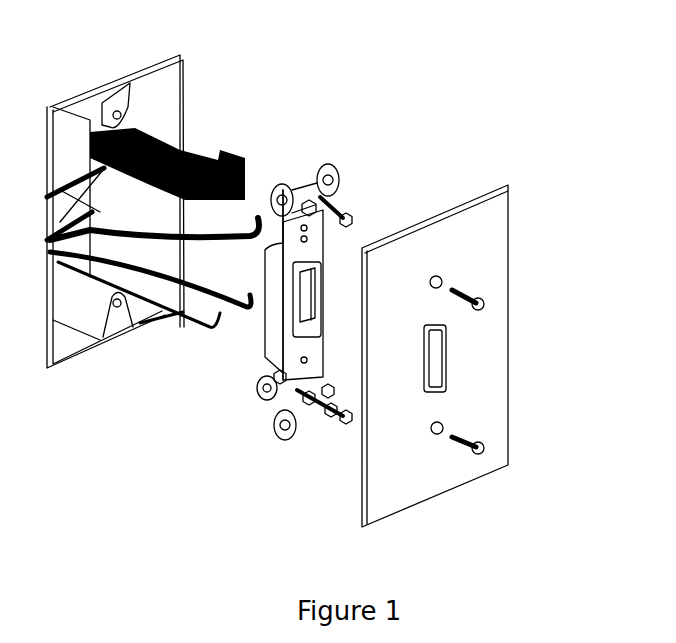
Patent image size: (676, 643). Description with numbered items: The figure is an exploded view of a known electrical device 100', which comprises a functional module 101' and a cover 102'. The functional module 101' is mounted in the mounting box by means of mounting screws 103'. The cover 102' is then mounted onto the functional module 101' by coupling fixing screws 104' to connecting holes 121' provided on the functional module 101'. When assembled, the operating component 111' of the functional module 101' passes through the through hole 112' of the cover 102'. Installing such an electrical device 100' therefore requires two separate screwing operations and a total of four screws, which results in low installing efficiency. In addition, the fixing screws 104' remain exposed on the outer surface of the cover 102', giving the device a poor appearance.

The electrical device 100' is at (338, 273).
The functional module 101' is at (283, 336).
The cover 102' is at (496, 356).
The mounting screws 103' is at (387, 190).
The fixing screws 104' is at (534, 372).
The operating component 111' is at (254, 369).
The through hole 112' is at (527, 346).
The connecting holes 121' is at (318, 443).